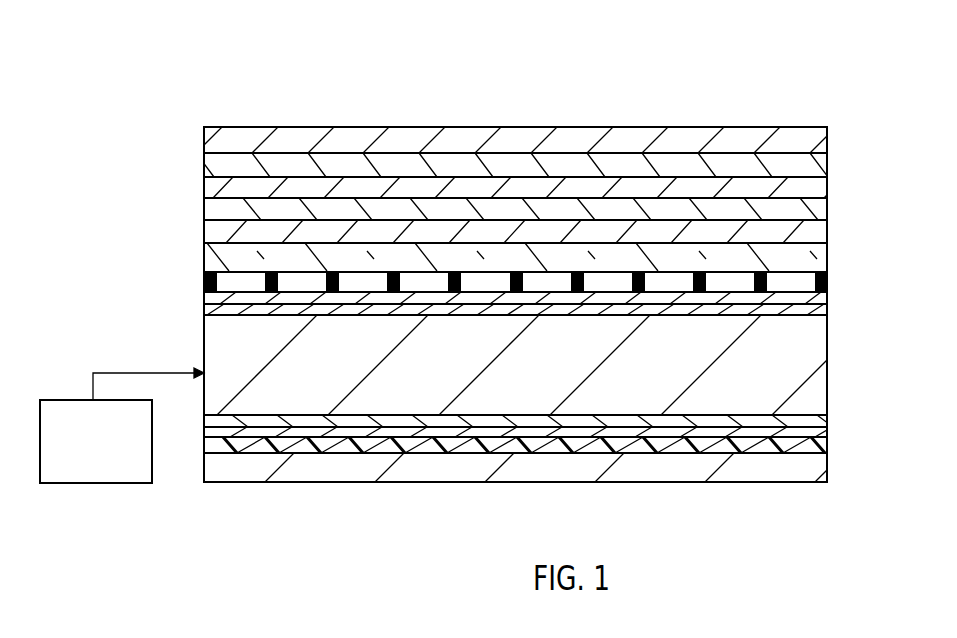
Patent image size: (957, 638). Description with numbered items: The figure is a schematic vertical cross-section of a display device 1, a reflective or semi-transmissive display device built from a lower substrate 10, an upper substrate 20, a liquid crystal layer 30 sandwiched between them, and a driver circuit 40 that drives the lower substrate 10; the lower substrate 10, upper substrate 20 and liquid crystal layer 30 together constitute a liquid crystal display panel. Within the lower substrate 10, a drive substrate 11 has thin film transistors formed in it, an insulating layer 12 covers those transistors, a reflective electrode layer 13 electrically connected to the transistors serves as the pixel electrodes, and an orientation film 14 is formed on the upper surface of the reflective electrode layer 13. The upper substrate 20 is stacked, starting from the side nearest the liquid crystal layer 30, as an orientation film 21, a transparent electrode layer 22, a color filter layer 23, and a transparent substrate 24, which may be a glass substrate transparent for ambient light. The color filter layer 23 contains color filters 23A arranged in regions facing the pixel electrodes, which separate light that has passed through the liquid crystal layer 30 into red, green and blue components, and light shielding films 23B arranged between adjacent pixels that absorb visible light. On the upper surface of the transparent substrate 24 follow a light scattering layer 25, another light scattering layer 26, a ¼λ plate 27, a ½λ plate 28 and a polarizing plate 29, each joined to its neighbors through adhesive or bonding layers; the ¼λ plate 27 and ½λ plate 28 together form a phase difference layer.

The display device 1 is at (853, 61).
The lower substrate 10 is at (890, 378).
The drive substrate 11 is at (828, 468).
The insulating layer 12 is at (828, 445).
The reflective electrode layer 13 is at (828, 432).
The orientation film 14 is at (828, 421).
The upper substrate 20 is at (890, 118).
The orientation film 21 is at (828, 310).
The transparent electrode layer 22 is at (828, 298).
The color filter layer 23 is at (828, 282).
The color filters 23A is at (667, 282).
The light shielding films 23B is at (758, 270).
The transparent substrate 24 is at (828, 257).
The light scattering layer 25 is at (828, 232).
The light scattering layer 26 is at (828, 209).
The ¼λ plate 27 is at (828, 188).
The ½λ plate 28 is at (828, 165).
The polarizing plate 29 is at (828, 140).
The liquid crystal layer 30 is at (828, 362).
The driver circuit 40 is at (97, 483).